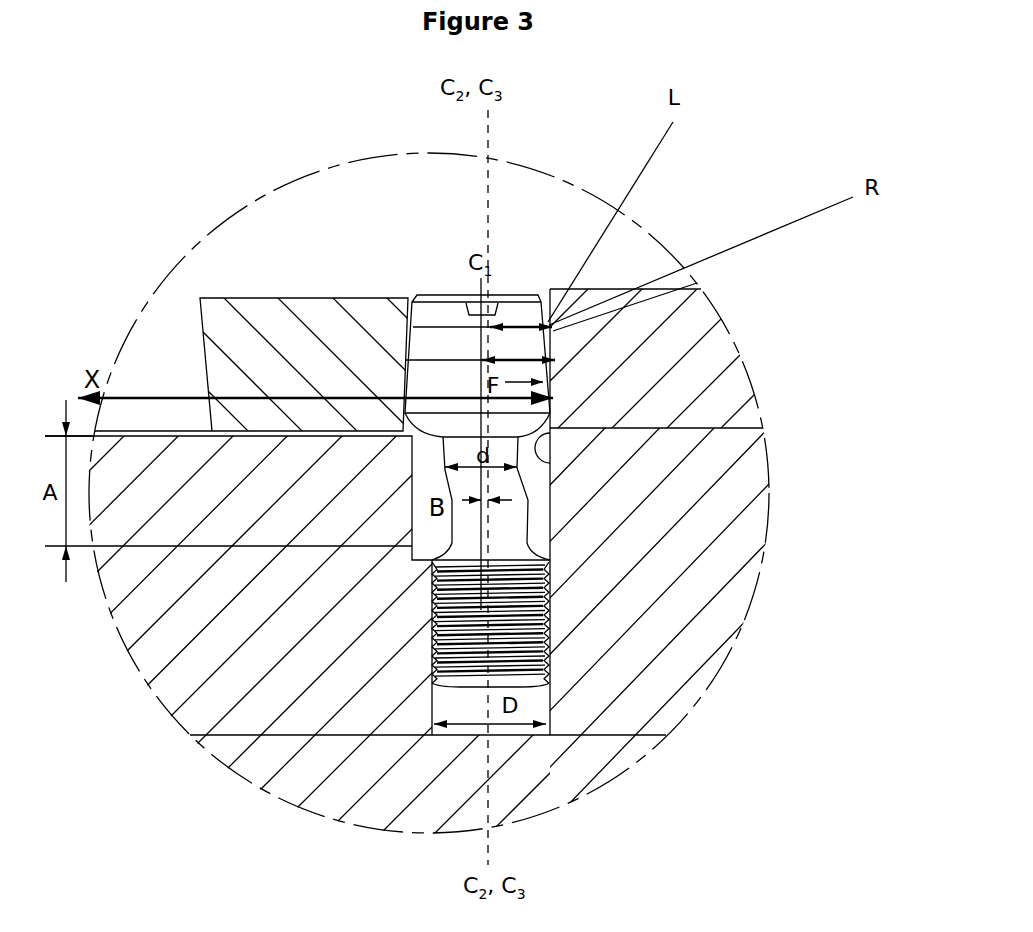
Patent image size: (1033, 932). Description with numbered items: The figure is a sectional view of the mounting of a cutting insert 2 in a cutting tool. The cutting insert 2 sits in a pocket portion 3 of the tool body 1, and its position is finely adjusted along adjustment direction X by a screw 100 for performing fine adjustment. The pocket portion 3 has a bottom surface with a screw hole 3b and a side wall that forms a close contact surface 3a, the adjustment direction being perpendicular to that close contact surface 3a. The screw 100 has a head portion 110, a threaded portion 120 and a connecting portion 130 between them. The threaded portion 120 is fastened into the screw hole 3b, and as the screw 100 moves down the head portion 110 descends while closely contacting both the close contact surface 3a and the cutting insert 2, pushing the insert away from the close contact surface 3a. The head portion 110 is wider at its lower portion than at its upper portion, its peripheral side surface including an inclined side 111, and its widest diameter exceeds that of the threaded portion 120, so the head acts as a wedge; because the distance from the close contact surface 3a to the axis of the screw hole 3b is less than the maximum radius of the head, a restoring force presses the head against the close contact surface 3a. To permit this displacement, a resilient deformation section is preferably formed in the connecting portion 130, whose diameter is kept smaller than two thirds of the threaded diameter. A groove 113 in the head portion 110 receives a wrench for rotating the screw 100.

The tool body 1 is at (703, 630).
The cutting insert 2 is at (287, 315).
The pocket portion 3 is at (285, 425).
The close contact surface 3a is at (553, 432).
The screw hole 3b is at (432, 601).
The screw for performing fine adjustment 100 is at (603, 403).
The head portion 110 is at (611, 263).
The inclined side 111 is at (551, 292).
The groove 113 is at (487, 294).
The threaded portion 120 is at (547, 627).
The connecting portion 130 is at (527, 517).